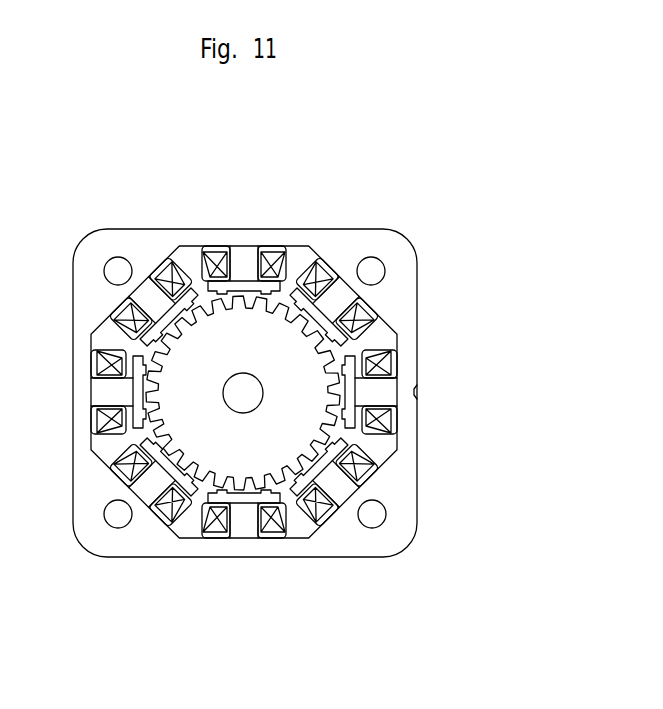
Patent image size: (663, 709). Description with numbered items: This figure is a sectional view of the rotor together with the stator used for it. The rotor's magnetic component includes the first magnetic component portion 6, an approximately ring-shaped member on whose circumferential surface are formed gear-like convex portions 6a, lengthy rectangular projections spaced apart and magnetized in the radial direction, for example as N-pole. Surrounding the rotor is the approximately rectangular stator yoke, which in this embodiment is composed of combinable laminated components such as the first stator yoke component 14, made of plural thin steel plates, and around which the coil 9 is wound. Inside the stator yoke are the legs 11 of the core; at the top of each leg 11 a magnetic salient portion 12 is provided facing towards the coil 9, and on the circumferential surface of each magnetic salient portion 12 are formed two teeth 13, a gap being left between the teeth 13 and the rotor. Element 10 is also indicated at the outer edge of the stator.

The stator pole 6 is at (293, 483).
The pole shoe end 6a is at (345, 432).
The coil 9 is at (357, 316).
The stator core 10 is at (420, 383).
The yoke 11 is at (343, 485).
The pole shoe 12 is at (297, 294).
The pole body 13 is at (253, 281).
The housing 14 is at (390, 252).